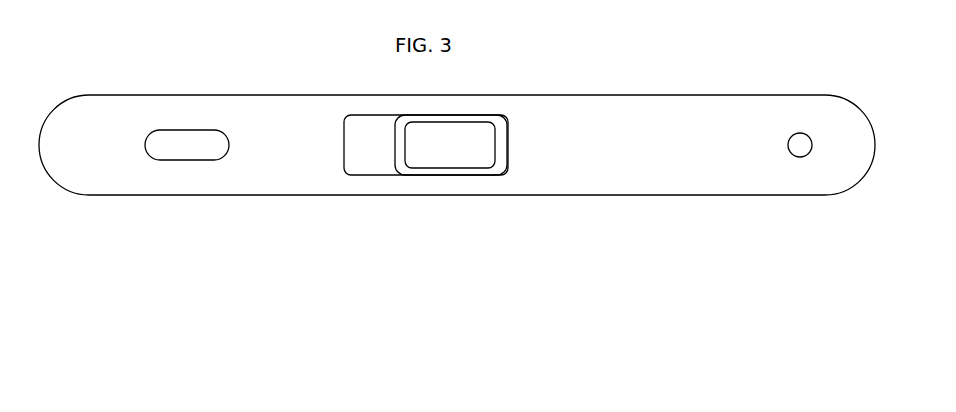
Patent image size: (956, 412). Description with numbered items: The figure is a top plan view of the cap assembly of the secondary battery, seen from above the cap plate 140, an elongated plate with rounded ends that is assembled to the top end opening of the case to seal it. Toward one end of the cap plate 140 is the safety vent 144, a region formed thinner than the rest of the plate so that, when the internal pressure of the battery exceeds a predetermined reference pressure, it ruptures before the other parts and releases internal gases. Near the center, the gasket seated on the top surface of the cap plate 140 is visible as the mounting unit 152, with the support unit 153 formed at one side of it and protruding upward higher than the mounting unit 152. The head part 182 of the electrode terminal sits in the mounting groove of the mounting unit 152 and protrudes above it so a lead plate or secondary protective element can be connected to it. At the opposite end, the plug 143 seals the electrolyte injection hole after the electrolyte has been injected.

The cap plate 140 is at (106, 177).
The safety vent 144 is at (185, 145).
The support unit 153 is at (362, 155).
The mounting unit 152 is at (398, 162).
The head part 182 is at (475, 155).
The plug 143 is at (800, 145).